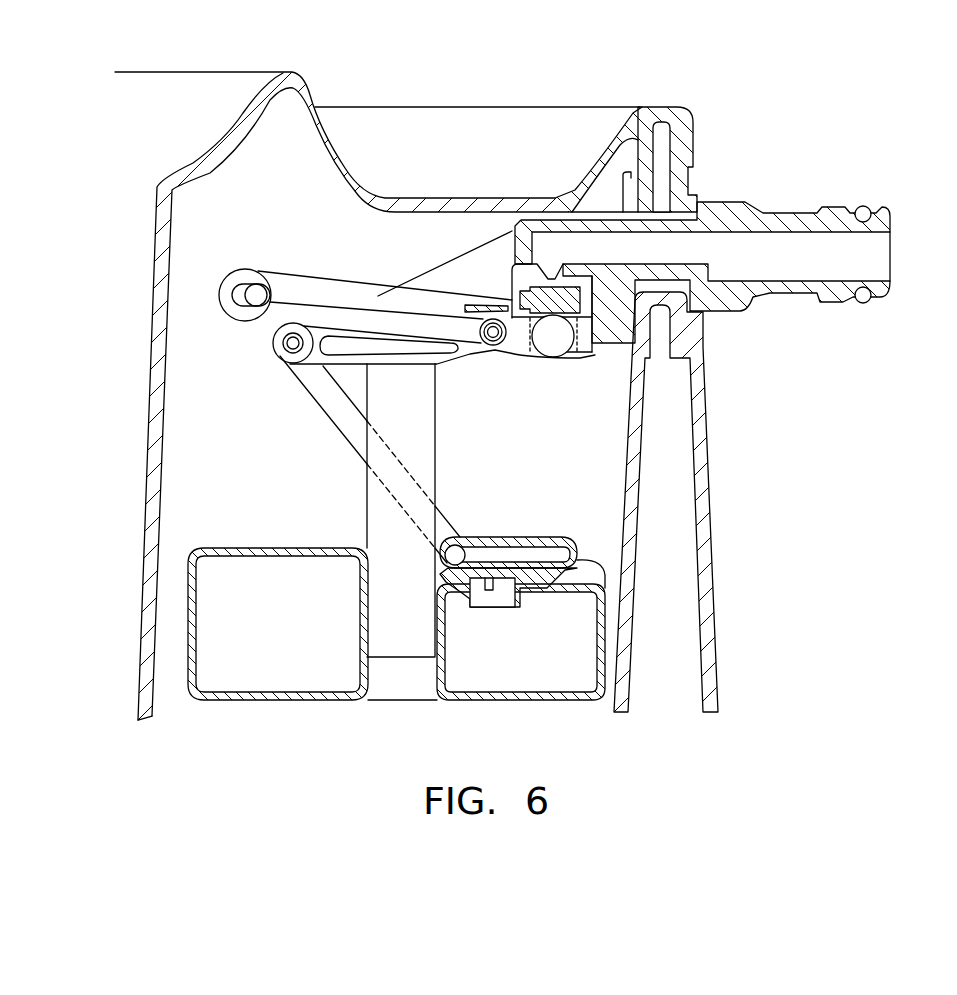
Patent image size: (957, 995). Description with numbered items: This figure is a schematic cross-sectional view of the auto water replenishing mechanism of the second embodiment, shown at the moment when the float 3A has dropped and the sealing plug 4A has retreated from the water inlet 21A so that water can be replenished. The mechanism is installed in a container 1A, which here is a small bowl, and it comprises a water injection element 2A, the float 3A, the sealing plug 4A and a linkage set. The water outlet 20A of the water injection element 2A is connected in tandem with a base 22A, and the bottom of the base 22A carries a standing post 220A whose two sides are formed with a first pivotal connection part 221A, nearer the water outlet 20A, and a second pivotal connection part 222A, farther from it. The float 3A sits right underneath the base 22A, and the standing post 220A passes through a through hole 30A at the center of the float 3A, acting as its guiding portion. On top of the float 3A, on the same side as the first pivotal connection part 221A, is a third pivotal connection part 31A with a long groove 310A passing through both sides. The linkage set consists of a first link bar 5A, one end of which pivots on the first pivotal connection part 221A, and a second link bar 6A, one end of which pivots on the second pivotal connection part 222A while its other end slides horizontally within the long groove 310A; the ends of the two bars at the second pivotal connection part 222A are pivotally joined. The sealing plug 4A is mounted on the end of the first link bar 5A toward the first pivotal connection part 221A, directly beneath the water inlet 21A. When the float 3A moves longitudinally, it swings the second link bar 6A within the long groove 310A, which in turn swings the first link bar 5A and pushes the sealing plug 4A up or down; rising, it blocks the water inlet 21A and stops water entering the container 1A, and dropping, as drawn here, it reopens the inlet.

The container 1A is at (710, 508).
The water injection element 2A is at (708, 222).
The water outlet 20A is at (837, 211).
The water inlet 21A is at (531, 262).
The base 22A is at (420, 366).
The standing post 220A is at (367, 523).
The first pivotal connection part 221A is at (507, 360).
The second pivotal connection part 222A is at (279, 352).
The float 3A is at (537, 700).
The through hole 30A is at (437, 668).
The third pivotal connection part 31A is at (547, 536).
The long groove 310A is at (487, 550).
The sealing plug 4A is at (520, 296).
The first link bar 5A is at (310, 290).
The second link bar 6A is at (314, 396).